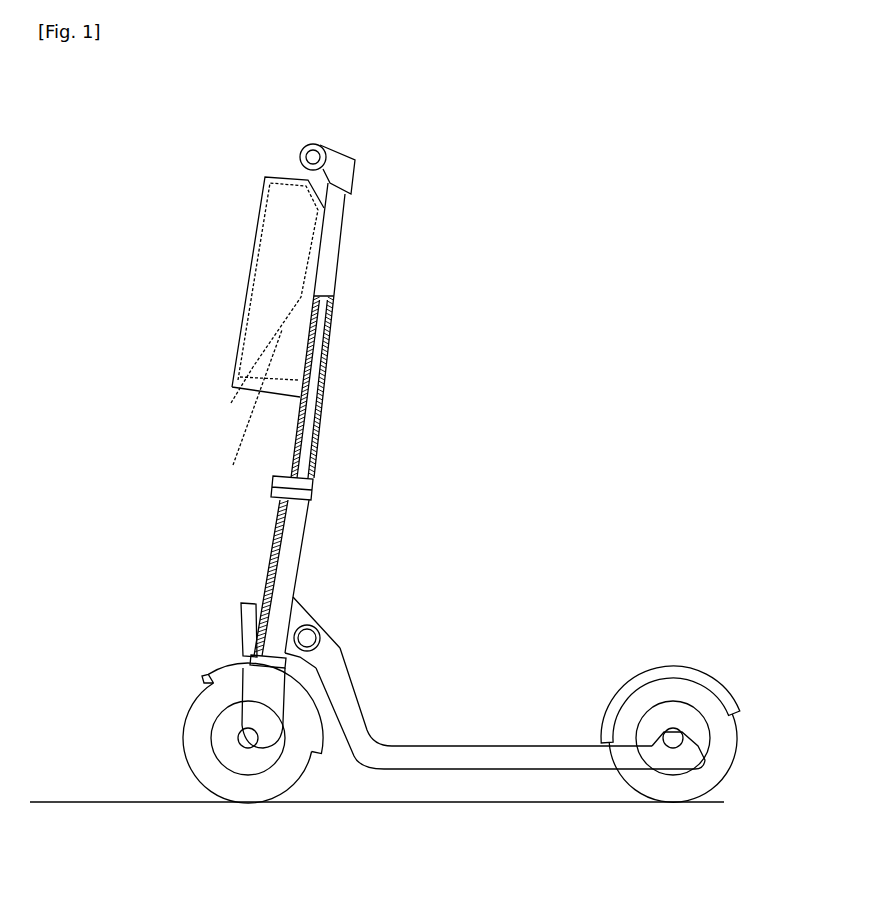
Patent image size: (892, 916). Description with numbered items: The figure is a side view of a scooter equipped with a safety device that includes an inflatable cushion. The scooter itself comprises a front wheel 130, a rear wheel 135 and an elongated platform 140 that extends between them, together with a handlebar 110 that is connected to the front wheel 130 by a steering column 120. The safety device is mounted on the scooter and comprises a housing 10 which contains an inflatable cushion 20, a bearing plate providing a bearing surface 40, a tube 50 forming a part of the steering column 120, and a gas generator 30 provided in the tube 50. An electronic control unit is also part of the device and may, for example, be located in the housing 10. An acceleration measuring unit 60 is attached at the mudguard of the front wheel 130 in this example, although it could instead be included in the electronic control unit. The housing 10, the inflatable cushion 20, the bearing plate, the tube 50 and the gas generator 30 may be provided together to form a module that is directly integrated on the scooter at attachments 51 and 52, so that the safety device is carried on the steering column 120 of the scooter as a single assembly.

The housing 10 is at (231, 403).
The inflatable cushion 20 is at (248, 263).
The gas generator 30 is at (330, 371).
The bearing surface 40 is at (233, 465).
The tube 50 is at (335, 307).
The attachment 51 is at (313, 467).
The attachment 52 is at (337, 253).
The acceleration measuring unit 60 is at (243, 630).
The handlebar 110 is at (320, 146).
The steering column 120 is at (348, 208).
The front wheel 130 is at (253, 790).
The rear wheel 135 is at (680, 790).
The elongated platform 140 is at (498, 767).